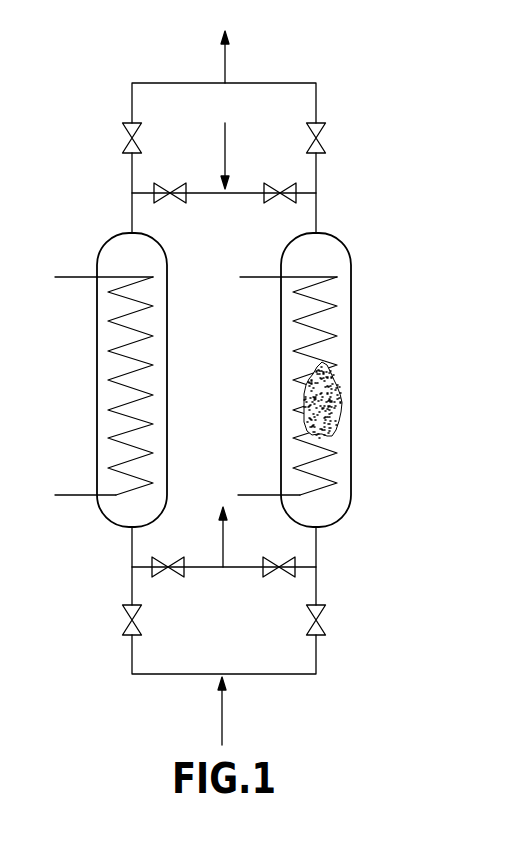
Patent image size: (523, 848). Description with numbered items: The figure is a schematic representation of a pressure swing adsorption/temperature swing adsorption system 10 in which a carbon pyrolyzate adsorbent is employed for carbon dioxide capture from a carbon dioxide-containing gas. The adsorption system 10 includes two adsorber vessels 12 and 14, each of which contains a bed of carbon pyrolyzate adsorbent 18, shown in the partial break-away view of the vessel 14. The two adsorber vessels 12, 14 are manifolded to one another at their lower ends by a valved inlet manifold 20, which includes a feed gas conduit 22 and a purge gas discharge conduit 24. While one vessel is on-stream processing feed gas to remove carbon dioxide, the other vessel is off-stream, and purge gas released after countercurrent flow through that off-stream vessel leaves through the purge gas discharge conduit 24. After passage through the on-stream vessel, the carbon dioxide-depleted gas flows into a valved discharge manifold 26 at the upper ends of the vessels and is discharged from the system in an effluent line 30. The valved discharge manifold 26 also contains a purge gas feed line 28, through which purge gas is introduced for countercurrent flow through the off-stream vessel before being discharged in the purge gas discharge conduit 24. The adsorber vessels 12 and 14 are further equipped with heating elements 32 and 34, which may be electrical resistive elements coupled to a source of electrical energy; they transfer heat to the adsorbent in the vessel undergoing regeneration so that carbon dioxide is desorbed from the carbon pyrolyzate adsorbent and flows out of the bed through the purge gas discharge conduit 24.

The pressure swing adsorption/temperature swing adsorption system 10 is at (435, 72).
The adsorber vessel 12 is at (100, 405).
The adsorber vessel 14 is at (340, 353).
The bed of carbon pyrolyzate adsorbent 18 is at (343, 426).
The valved inlet manifold 20 is at (97, 617).
The feed gas conduit 22 is at (226, 700).
The purge gas discharge conduit 24 is at (222, 546).
The valved discharge manifold 26 is at (76, 140).
The purge gas feed line 28 is at (226, 146).
The effluent line 30 is at (226, 56).
The heating element 32 is at (77, 279).
The heating element 34 is at (259, 279).